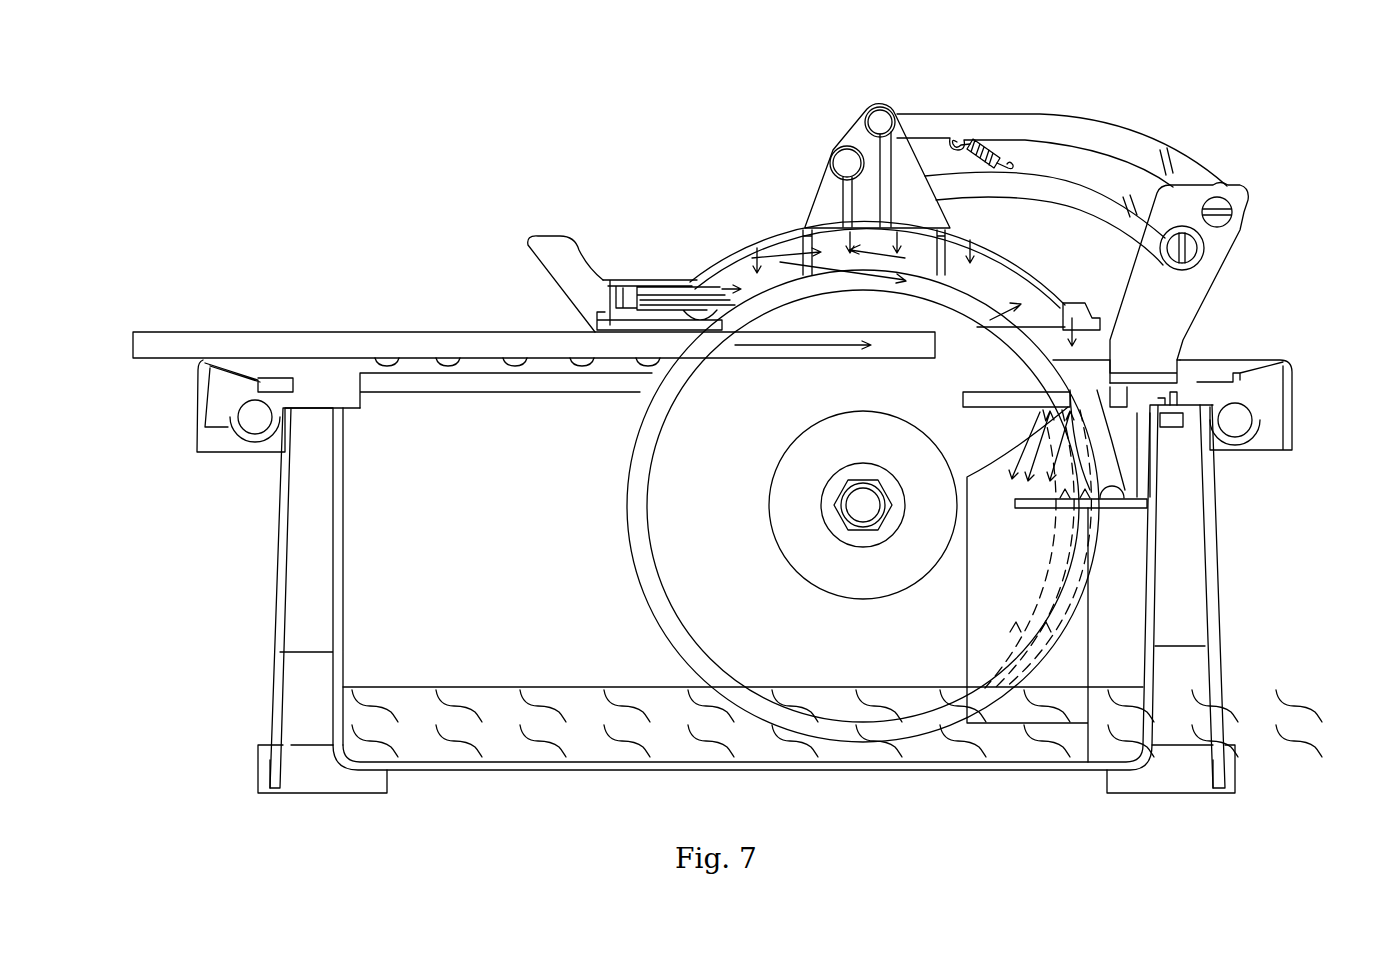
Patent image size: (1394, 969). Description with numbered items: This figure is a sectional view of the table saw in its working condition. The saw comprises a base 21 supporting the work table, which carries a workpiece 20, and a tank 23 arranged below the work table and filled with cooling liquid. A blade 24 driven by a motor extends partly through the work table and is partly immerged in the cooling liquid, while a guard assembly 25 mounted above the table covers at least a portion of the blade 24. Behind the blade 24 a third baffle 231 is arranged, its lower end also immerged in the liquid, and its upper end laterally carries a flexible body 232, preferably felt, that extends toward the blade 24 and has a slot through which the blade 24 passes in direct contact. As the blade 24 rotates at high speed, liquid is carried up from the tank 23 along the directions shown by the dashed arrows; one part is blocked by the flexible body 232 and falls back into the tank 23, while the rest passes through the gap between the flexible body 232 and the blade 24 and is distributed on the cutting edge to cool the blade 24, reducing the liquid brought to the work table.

The workpiece 20 is at (292, 340).
The base 21 is at (302, 583).
The tank 23 is at (470, 740).
The blade 24 is at (793, 650).
The guard assembly 25 is at (1204, 130).
The third baffle 231 is at (1052, 658).
The flexible body 232 is at (1000, 400).